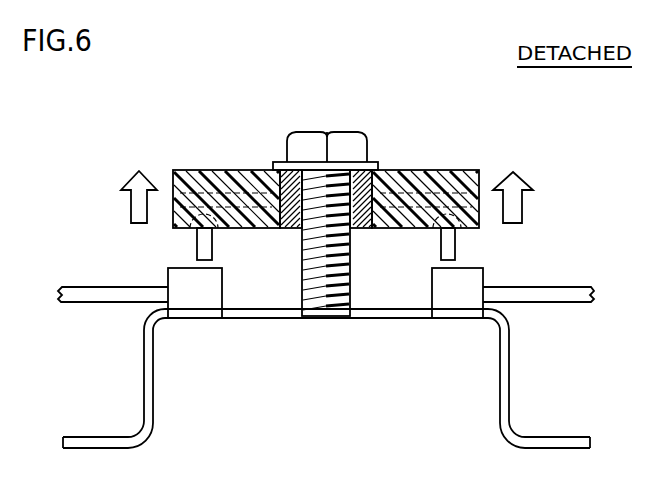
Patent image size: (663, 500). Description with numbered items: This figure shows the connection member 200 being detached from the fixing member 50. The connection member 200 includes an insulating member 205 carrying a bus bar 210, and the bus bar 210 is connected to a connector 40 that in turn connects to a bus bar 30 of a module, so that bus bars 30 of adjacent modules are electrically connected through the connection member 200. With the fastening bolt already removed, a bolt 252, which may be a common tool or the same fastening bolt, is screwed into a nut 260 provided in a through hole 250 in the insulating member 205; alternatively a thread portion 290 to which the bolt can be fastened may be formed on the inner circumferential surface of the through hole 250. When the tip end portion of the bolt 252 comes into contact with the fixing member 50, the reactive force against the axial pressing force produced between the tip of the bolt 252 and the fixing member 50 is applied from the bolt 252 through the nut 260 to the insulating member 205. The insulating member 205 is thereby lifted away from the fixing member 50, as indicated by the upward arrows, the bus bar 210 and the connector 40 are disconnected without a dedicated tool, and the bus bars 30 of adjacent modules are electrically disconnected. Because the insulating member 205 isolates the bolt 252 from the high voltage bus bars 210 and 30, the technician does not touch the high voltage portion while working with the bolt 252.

The connection member 200 is at (383, 105).
The bolt 252 is at (307, 147).
The through hole 250 is at (293, 228).
The nut 260 is at (279, 171).
The thread portion 290 is at (359, 229).
The bus bar 210 is at (407, 202).
The insulating member 205 is at (457, 186).
The connector 40 is at (193, 300).
The bus bar 30 is at (74, 295).
The fixing member 50 is at (165, 383).